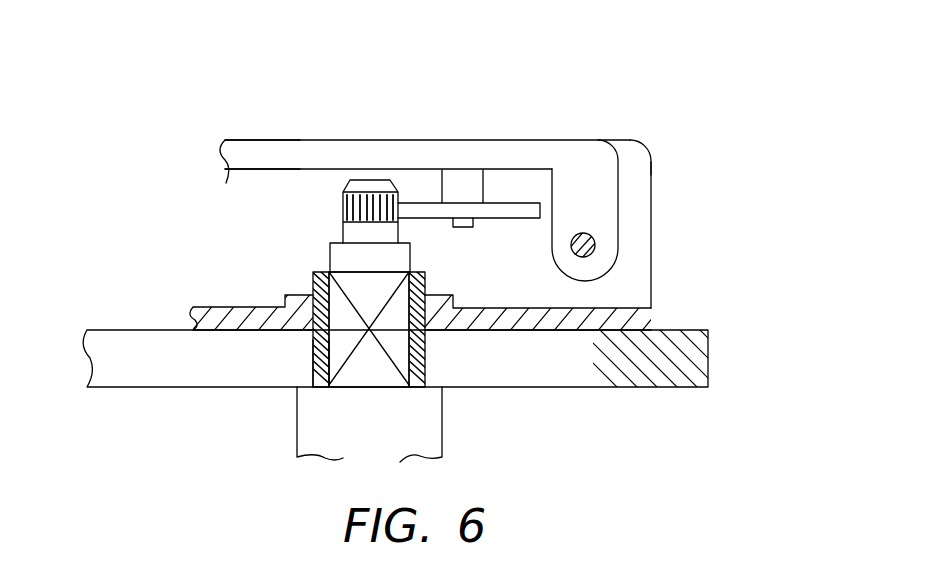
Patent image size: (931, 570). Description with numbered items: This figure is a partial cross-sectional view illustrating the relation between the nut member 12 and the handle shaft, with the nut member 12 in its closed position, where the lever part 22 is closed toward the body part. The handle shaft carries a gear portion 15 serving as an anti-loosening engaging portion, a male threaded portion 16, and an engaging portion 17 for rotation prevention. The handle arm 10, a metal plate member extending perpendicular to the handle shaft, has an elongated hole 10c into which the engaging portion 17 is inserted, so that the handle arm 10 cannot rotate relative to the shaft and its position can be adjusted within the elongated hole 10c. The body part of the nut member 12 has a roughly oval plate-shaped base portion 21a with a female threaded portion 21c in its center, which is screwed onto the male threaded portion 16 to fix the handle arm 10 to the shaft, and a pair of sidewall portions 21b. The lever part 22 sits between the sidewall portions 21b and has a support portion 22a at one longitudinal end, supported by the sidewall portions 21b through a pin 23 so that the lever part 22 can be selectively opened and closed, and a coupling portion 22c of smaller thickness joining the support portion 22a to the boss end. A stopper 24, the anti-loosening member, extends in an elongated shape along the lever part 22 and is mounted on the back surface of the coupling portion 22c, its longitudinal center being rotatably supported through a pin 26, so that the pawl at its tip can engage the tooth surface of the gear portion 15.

The handle arm 10 is at (708, 343).
The elongated hole 10c is at (593, 365).
The nut member 12 is at (659, 135).
The gear portion 15 is at (343, 205).
The male threaded portion 16 is at (313, 276).
The engaging portion 17 is at (397, 347).
The base portion 21a is at (651, 308).
The sidewall portions 21b is at (652, 178).
The female threaded portion 21c is at (333, 316).
The lever part 22 is at (408, 137).
The support portion 22a is at (607, 242).
The coupling portion 22c is at (298, 160).
The pin 23 is at (583, 232).
The stopper 24 is at (515, 210).
The pin 26 is at (463, 227).